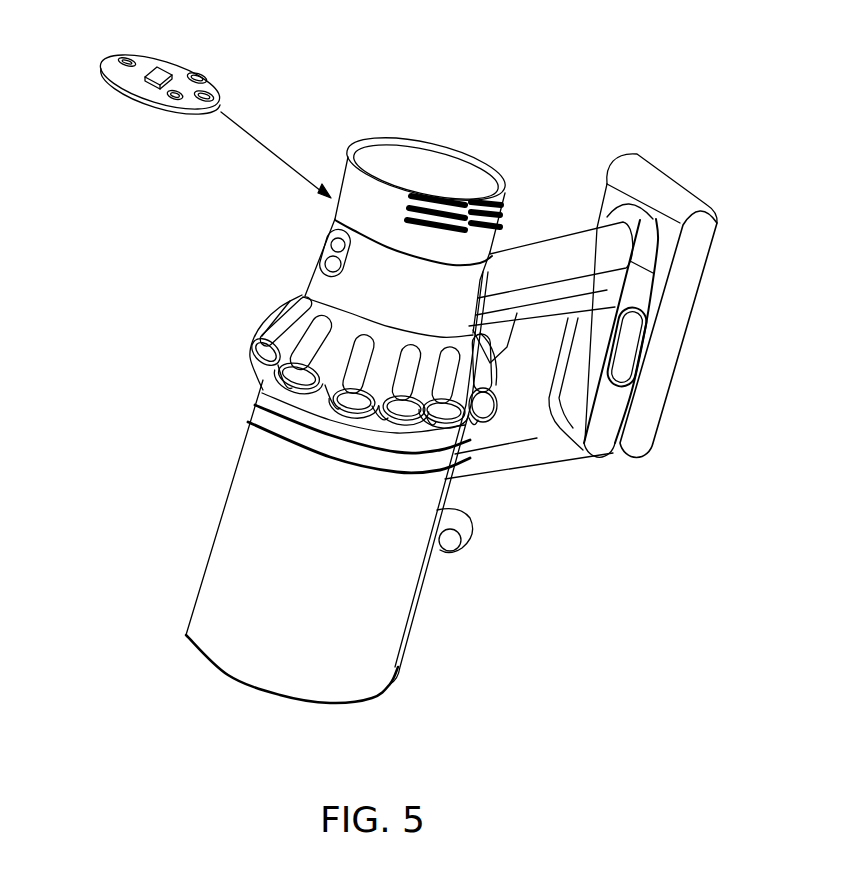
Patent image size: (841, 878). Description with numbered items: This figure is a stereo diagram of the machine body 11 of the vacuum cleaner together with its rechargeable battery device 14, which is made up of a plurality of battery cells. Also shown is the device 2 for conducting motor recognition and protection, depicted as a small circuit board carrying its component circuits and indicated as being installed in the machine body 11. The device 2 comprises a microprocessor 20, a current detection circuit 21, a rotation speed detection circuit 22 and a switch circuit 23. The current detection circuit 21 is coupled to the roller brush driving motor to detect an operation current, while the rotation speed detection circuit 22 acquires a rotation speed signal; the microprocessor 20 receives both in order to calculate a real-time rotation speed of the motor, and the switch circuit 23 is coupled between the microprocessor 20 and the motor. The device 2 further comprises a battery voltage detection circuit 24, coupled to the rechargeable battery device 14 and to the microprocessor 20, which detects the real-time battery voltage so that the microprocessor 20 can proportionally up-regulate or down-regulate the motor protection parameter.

The device for conducting motor recognition and protection 2 is at (184, 105).
The machine body 11 is at (285, 291).
The rechargeable battery device 14 is at (676, 388).
The microprocessor 20 is at (158, 68).
The current detection circuit 21 is at (177, 90).
The rotation speed detection circuit 22 is at (207, 77).
The switch circuit 23 is at (100, 60).
The battery voltage detection circuit 24 is at (213, 94).